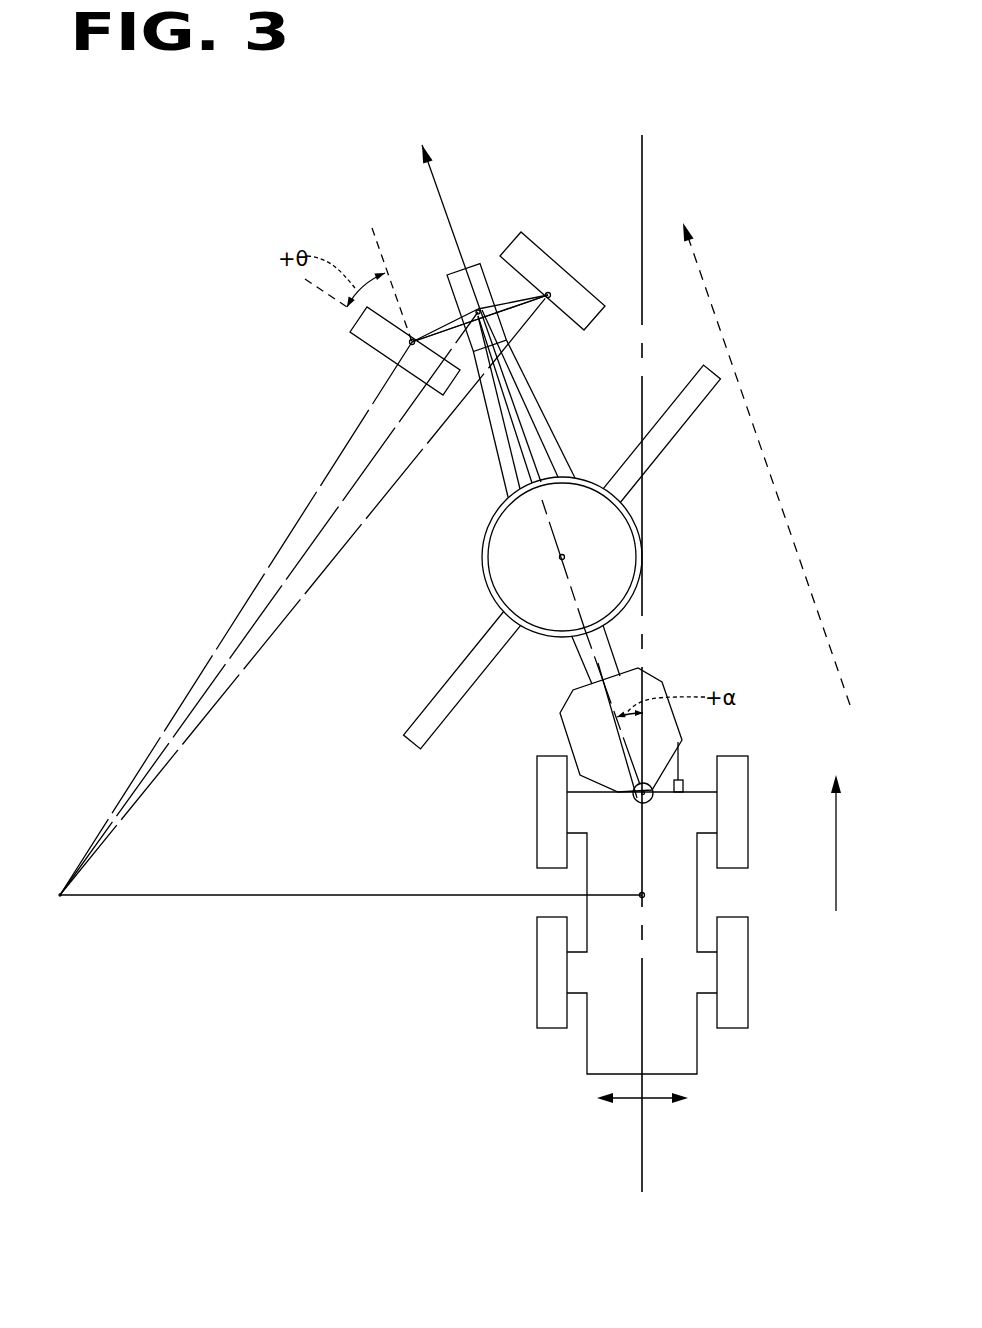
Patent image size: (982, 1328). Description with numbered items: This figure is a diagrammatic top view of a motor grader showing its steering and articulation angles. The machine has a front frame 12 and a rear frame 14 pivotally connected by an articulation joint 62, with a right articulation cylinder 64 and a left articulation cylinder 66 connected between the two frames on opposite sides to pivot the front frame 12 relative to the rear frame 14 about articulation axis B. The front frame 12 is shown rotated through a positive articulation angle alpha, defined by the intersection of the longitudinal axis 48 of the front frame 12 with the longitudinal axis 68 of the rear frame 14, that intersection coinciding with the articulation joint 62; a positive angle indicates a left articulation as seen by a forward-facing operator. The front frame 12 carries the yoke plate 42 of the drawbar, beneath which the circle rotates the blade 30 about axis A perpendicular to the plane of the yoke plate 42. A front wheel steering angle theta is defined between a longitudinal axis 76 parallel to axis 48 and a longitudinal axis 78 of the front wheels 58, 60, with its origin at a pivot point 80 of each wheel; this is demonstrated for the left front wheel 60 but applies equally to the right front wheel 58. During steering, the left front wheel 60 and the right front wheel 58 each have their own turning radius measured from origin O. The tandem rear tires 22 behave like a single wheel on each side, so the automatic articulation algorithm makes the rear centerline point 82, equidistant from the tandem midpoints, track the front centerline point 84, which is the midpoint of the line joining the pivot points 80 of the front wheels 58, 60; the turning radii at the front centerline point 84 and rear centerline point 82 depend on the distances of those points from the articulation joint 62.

The front frame 12 is at (540, 415).
The rear frame 14 is at (587, 1045).
The rear tires 22 is at (535, 840).
The blade 30 is at (405, 742).
The yoke plate 42 is at (482, 552).
The longitudinal axis 48 is at (437, 193).
The right front wheel 58 is at (542, 250).
The left front wheel 60 is at (358, 357).
The articulation joint 62 is at (648, 803).
The right articulation cylinder 64 is at (684, 778).
The left articulation cylinder 66 is at (583, 768).
The longitudinal axis 68 is at (645, 150).
The longitudinal axis 76 is at (383, 258).
The longitudinal axis 78 is at (322, 303).
The pivot point 80 is at (552, 292).
The rear centerline point 82 is at (643, 897).
The front centerline point 84 is at (470, 308).